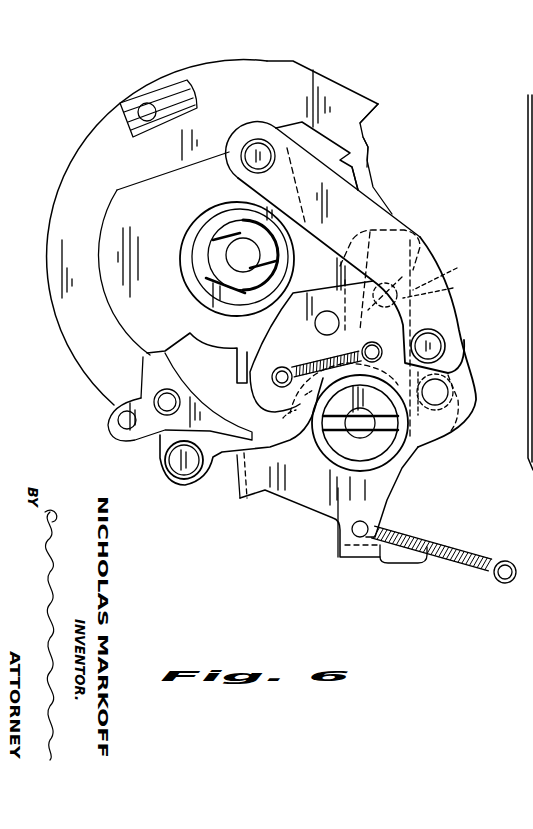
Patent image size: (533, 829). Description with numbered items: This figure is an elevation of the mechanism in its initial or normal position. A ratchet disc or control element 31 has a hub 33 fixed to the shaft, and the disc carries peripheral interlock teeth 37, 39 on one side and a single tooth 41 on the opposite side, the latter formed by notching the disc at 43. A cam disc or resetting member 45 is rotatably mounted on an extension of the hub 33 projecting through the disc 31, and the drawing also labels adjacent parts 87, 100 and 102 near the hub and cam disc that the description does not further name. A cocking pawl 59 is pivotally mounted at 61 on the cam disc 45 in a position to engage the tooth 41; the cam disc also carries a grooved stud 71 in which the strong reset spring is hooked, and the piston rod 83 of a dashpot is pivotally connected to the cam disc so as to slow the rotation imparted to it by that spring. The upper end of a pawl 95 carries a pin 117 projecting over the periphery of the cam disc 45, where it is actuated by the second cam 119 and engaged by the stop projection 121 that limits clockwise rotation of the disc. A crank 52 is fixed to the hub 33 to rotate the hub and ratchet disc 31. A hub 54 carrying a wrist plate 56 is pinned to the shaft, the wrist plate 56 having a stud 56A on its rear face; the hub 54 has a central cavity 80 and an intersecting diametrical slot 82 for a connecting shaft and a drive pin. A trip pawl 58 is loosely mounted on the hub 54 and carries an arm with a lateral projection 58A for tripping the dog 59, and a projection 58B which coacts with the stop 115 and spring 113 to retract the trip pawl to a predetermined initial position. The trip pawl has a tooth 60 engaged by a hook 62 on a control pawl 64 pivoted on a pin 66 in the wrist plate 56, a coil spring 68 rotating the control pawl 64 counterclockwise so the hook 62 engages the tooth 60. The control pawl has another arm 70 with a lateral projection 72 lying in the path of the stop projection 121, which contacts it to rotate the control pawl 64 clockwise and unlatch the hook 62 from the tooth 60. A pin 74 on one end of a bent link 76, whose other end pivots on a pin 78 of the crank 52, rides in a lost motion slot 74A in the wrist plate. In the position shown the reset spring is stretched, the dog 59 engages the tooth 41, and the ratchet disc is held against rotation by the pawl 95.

The ratchet disc 31 is at (145, 174).
The hub 33 is at (185, 289).
The peripheral interlock tooth 37 is at (382, 205).
The peripheral interlock tooth 39 is at (357, 133).
The tooth 41 is at (142, 355).
The notch 43 is at (228, 346).
The cam disc 45 is at (58, 167).
The crank 52 is at (196, 206).
The hub 54 is at (412, 427).
The wrist plate 56 is at (484, 366).
The stud 56A is at (458, 429).
The trip pawl 58 is at (395, 496).
The lateral projection 58A is at (243, 482).
The projection 58B is at (338, 548).
The cocking pawl 59 is at (150, 373).
The tooth 60 is at (309, 389).
The pivot 61 is at (174, 397).
The hook 62 is at (277, 418).
The control pawl 64 is at (281, 334).
The pin 66 is at (324, 316).
The coil spring 68 is at (321, 353).
The arm 70 is at (408, 233).
The grooved stud 71 is at (175, 460).
The lateral projection 72 is at (418, 268).
The pin 74 is at (445, 345).
The lost motion slot 74A is at (441, 377).
The bent link 76 is at (365, 184).
The pin 78 is at (258, 150).
The central cavity 80 is at (348, 438).
The diametrical slot 82 is at (360, 423).
The piston rod 83 is at (190, 80).
The plate edge 87 is at (292, 62).
The pawl 95 is at (449, 275).
The shaft 100 is at (226, 252).
The keyway 102 is at (247, 214).
The spring 113 is at (420, 538).
The stop 115 is at (390, 565).
The pin 117 is at (445, 290).
The second cam 119 is at (371, 151).
The stop projection 121 is at (383, 114).